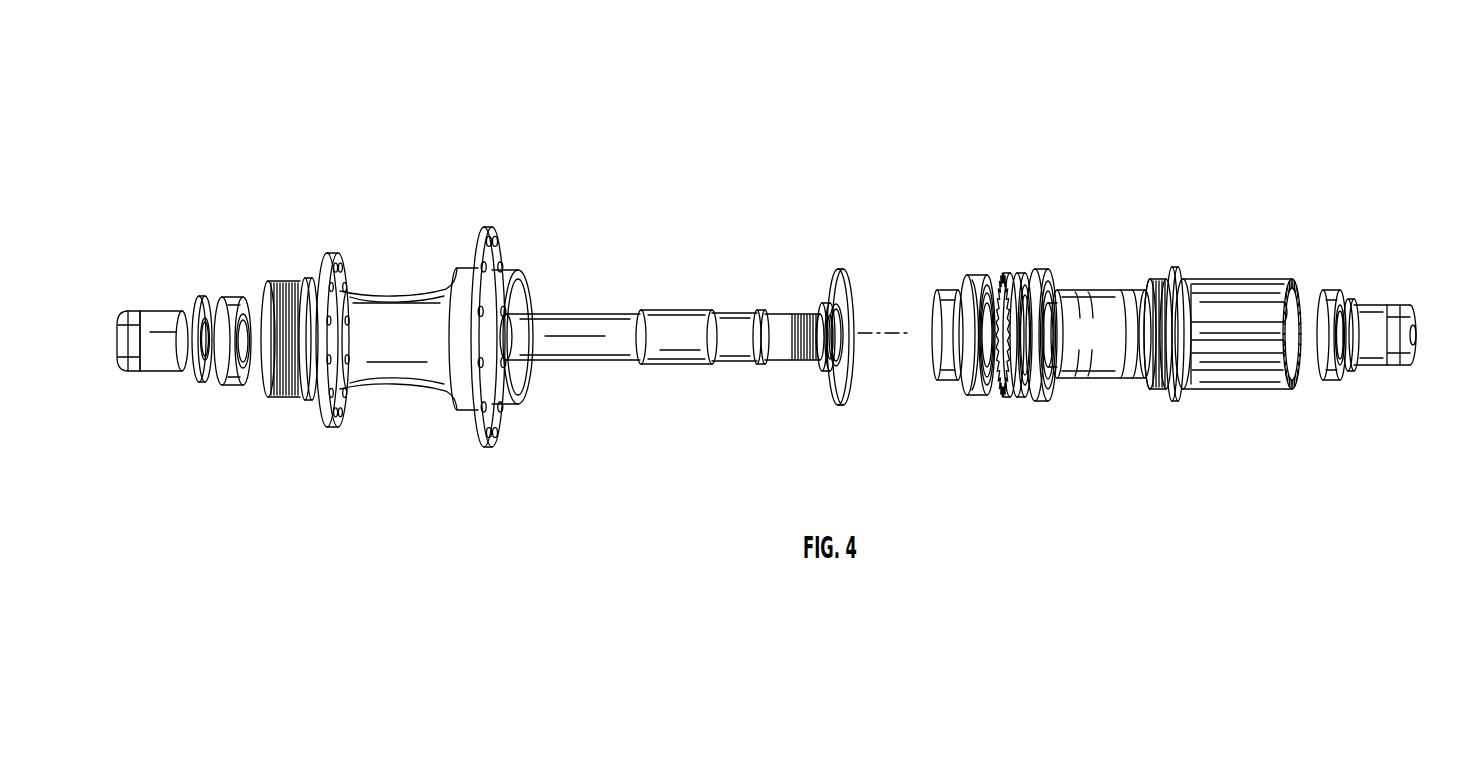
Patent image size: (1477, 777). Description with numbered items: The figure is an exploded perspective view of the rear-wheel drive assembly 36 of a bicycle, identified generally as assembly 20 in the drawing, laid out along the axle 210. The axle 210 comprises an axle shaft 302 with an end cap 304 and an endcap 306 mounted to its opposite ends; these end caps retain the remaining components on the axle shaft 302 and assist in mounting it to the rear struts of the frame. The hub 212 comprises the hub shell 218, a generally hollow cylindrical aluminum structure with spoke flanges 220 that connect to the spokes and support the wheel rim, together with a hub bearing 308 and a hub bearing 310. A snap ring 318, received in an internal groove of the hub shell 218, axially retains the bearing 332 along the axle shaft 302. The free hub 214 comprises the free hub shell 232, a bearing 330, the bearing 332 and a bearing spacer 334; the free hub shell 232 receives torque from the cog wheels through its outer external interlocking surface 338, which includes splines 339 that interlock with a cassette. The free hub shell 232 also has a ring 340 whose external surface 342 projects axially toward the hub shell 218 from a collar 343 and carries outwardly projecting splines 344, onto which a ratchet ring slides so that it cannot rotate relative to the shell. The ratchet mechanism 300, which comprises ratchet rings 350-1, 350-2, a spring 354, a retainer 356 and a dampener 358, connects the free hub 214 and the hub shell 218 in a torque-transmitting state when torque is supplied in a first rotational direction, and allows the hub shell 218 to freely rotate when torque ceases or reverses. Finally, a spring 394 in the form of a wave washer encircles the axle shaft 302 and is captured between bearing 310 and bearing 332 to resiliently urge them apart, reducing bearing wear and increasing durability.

The bicycle hub assembly 20 is at (260, 151).
The drive assembly 36 is at (510, 165).
The axle 210 is at (593, 310).
The hub 212 is at (338, 248).
The free hub 214 is at (1240, 280).
The hub shell 218 is at (402, 284).
The spoke flanges 220 is at (347, 262).
The free hub shell 232 is at (1210, 280).
The ratchet mechanism 300 is at (1008, 253).
The axle shaft 302 is at (617, 364).
The end cap 304 is at (1371, 311).
The endcap 306 is at (161, 311).
The hub bearing 308 is at (228, 280).
The hub bearing 310 is at (950, 290).
The snap ring 318 is at (1048, 382).
The bearing 330 is at (1332, 292).
The bearing 332 is at (1066, 287).
The bearing spacer 334 is at (1108, 378).
The external interlocking surface 338 is at (1240, 395).
The splines 339 is at (1269, 369).
The ring 340 is at (1164, 392).
The external surface 342 is at (1158, 284).
The collar 343 is at (1175, 270).
The splines 344 is at (1145, 385).
The ratchet ring 350-1 is at (1000, 400).
The ratchet ring 350-2 is at (1016, 400).
The spring 354 is at (979, 275).
The retainer 356 is at (841, 402).
The dampener 358 is at (1045, 270).
The spring 394 is at (813, 368).